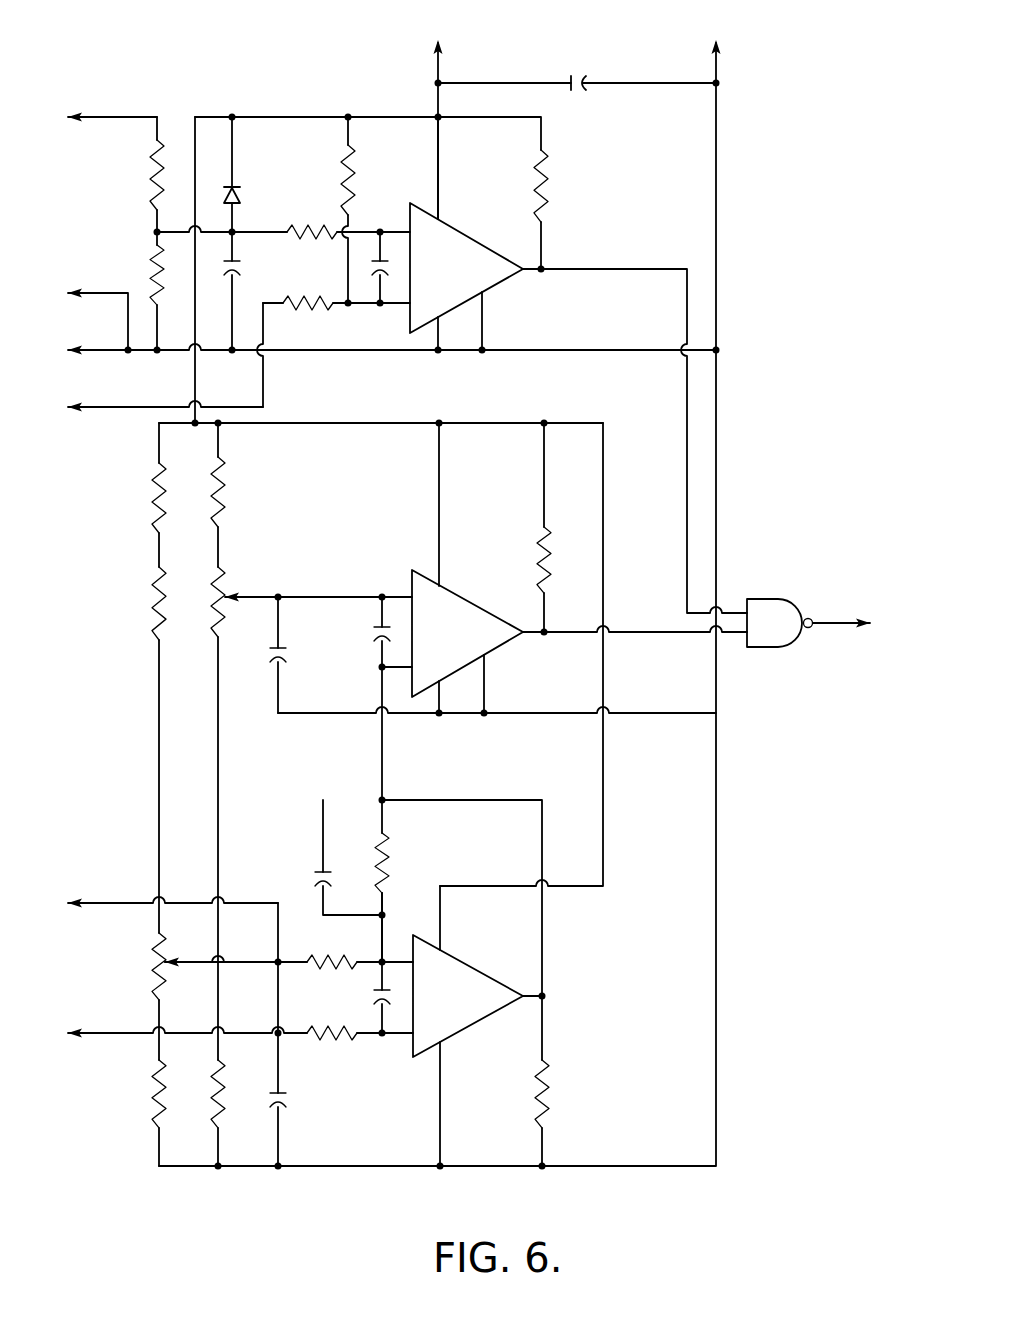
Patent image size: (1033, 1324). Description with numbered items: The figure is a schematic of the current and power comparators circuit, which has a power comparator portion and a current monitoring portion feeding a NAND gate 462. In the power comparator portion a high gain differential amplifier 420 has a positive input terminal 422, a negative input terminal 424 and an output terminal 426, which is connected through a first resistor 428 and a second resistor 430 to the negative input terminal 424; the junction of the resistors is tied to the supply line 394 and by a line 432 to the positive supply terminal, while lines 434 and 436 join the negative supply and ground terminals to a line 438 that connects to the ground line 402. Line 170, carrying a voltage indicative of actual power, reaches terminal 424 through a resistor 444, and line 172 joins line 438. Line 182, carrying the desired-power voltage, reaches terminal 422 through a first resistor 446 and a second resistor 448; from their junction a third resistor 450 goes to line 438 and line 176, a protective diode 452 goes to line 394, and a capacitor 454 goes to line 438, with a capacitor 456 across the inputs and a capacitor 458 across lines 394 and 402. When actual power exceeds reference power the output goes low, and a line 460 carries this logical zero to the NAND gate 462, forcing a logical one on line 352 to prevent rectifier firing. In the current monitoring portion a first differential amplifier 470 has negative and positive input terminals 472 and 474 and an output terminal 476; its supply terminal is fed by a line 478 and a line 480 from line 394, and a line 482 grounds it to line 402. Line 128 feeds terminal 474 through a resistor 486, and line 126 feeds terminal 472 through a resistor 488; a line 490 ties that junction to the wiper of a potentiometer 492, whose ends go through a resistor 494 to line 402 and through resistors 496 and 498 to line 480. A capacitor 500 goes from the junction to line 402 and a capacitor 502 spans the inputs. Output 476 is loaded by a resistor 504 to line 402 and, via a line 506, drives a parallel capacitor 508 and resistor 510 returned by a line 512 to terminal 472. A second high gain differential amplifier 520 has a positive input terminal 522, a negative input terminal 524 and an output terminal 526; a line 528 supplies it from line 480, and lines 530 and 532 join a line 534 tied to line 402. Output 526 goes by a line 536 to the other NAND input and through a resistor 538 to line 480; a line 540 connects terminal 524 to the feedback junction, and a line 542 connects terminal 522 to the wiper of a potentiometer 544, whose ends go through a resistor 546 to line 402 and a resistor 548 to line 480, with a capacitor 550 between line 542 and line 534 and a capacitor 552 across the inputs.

The line 182 is at (130, 115).
The first resistor 446 is at (150, 170).
The third resistor 450 is at (152, 272).
The line 176 is at (108, 290).
The line 172 is at (112, 347).
The line 170 is at (130, 406).
The line 480 is at (198, 387).
The protective diode 452 is at (237, 190).
The second resistor 448 is at (316, 222).
The capacitor 454 is at (240, 272).
The resistor 444 is at (303, 308).
The capacitor 456 is at (366, 280).
The second resistor 430 is at (356, 166).
The positive input terminal 422 is at (396, 225).
The negative input terminal 424 is at (396, 300).
The high gain differential amplifier 420 is at (478, 238).
The line 432 is at (443, 148).
The first resistor 428 is at (548, 190).
The line 394 is at (440, 64).
The capacitor 458 is at (568, 80).
The line 402 is at (712, 63).
The output terminal 426 is at (543, 262).
The line 460 is at (640, 266).
The line 436 is at (492, 312).
The line 438 is at (650, 350).
The line 434 is at (440, 356).
The resistor 498 is at (157, 500).
The resistor 548 is at (230, 510).
The resistor 496 is at (157, 610).
The potentiometer 544 is at (230, 600).
The line 542 is at (320, 593).
The capacitor 552 is at (375, 640).
The capacitor 550 is at (287, 658).
The negative input terminal 524 is at (390, 670).
The line 528 is at (439, 497).
The positive input terminal 522 is at (397, 593).
The resistor 538 is at (535, 545).
The second high gain differential amplifier 520 is at (485, 612).
The line 536 is at (578, 630).
The output terminal 526 is at (547, 635).
The line 532 is at (486, 690).
The line 530 is at (445, 714).
The line 534 is at (560, 714).
The line 540 is at (384, 772).
The NAND gate 462 is at (770, 598).
The line 352 is at (838, 622).
The line 478 is at (605, 800).
The resistor 510 is at (393, 845).
The line 506 is at (542, 855).
The capacitor 508 is at (320, 870).
The negative input terminal 472 is at (400, 955).
The first differential amplifier 470 is at (495, 978).
The output terminal 476 is at (545, 995).
The line 490 is at (250, 960).
The line 512 is at (378, 935).
The resistor 488 is at (333, 965).
The capacitor 502 is at (375, 1000).
The resistor 486 is at (340, 1040).
The positive input terminal 474 is at (398, 1040).
The resistor 504 is at (548, 1090).
The line 482 is at (442, 1107).
The line 126 is at (108, 895).
The potentiometer 492 is at (157, 950).
The line 128 is at (110, 1030).
The resistor 494 is at (155, 1100).
The resistor 546 is at (228, 1112).
The capacitor 500 is at (285, 1110).